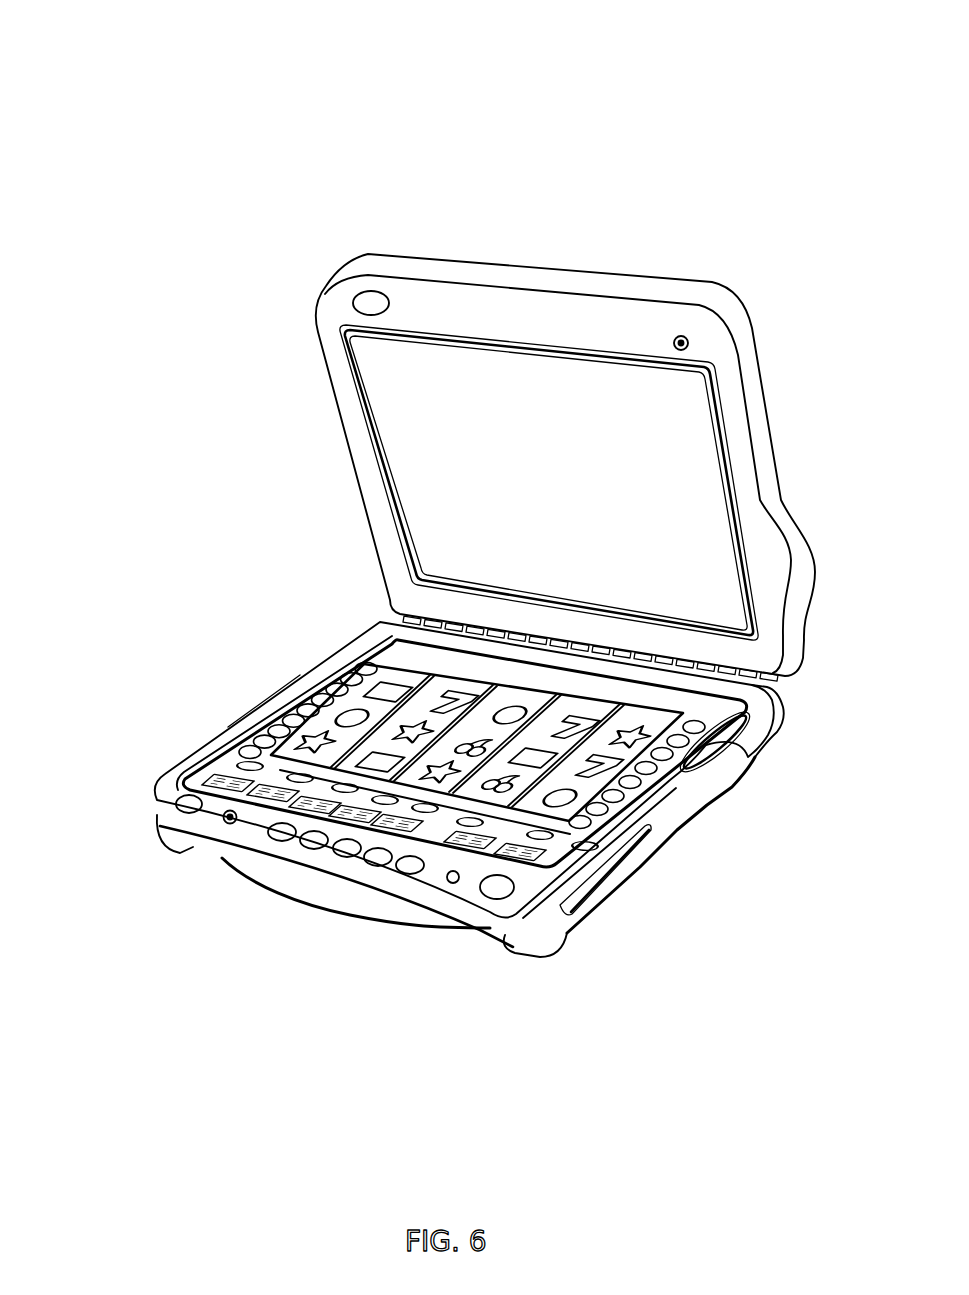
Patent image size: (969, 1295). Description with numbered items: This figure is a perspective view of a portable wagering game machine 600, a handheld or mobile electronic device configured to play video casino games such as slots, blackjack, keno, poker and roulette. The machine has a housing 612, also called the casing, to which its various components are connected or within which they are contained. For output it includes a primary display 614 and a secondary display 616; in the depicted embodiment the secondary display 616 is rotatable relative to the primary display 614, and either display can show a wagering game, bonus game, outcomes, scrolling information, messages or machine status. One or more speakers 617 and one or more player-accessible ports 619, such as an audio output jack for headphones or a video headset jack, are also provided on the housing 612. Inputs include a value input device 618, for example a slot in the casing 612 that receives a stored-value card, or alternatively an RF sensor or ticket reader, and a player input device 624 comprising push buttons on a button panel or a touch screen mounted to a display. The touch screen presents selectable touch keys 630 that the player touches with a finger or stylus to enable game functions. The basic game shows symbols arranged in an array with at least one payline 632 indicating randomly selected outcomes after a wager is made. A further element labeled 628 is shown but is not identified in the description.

The portable wagering game machine 600 is at (155, 21).
The housing 612 is at (305, 683).
The primary display 614 is at (392, 655).
The secondary display 616 is at (405, 457).
The speakers 617 is at (173, 803).
The value input device 618 is at (640, 845).
The player-accessible ports 619 is at (233, 823).
The player input device 624 is at (337, 860).
The hinge 628 is at (763, 680).
The touch keys 630 is at (470, 853).
The payline 632 is at (705, 790).